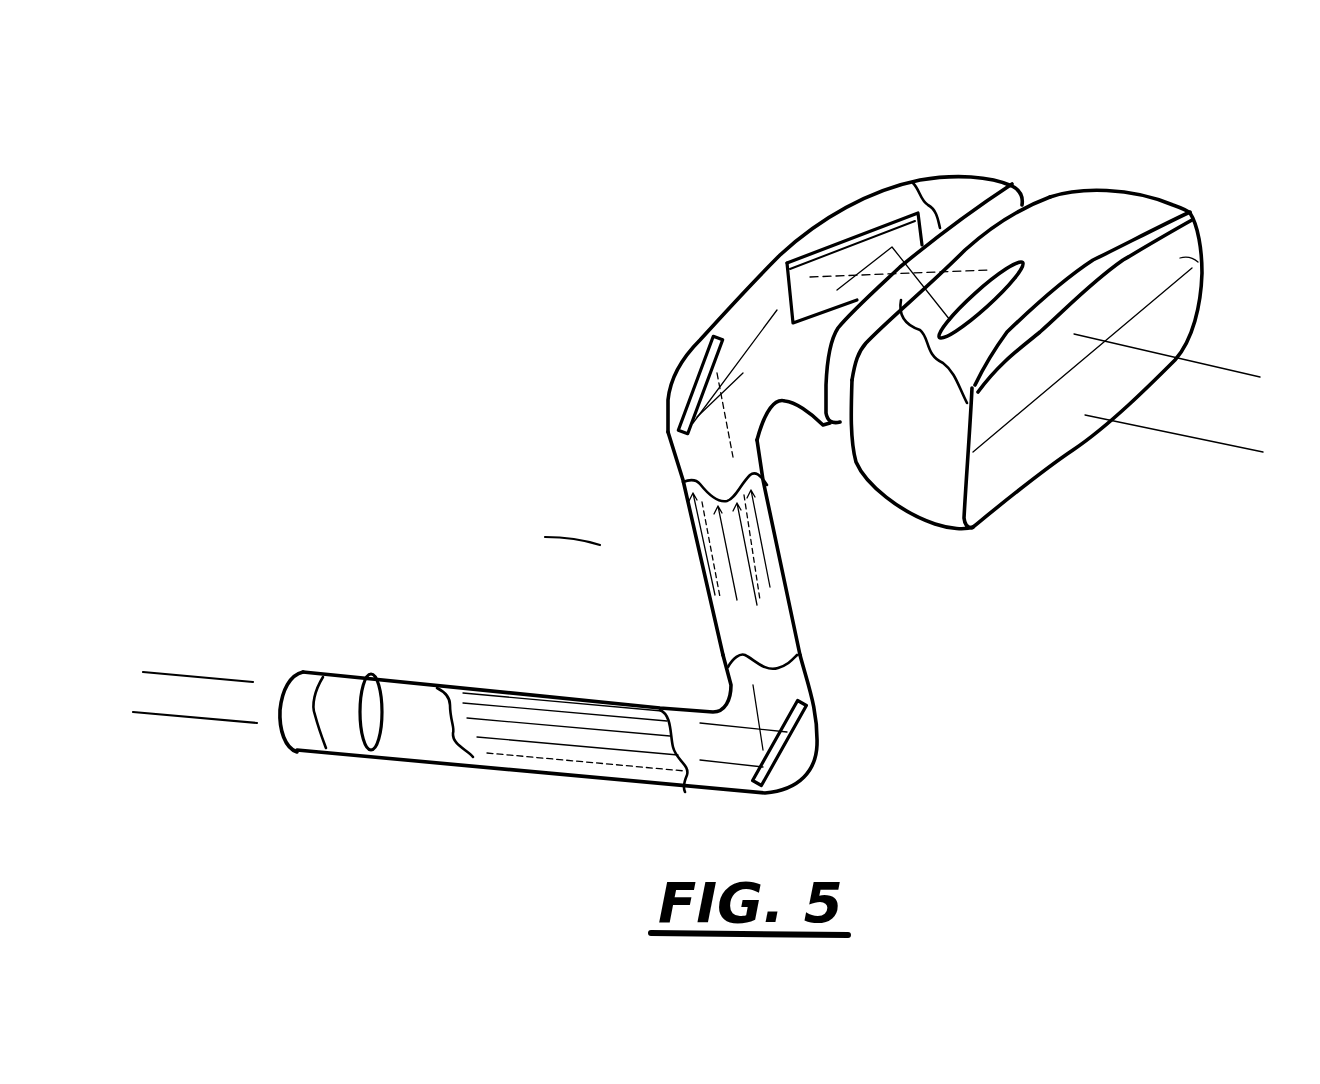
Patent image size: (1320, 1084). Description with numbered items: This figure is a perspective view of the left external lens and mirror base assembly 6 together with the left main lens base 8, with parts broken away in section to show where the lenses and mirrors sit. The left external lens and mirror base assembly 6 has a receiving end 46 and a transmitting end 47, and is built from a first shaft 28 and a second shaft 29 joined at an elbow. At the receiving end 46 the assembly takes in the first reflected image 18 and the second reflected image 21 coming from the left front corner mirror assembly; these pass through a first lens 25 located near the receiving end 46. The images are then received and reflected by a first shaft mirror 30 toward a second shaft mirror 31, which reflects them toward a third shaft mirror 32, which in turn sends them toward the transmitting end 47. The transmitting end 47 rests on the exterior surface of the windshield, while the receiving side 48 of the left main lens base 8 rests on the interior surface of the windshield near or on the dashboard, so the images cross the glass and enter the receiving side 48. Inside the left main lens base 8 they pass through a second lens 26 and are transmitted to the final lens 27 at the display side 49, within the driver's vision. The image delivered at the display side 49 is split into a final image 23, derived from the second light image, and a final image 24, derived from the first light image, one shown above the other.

The left external lens and mirror base assembly 6 is at (553, 538).
The left main lens base 8 is at (1057, 197).
The first reflected image 18 is at (192, 723).
The second reflected image 21 is at (203, 680).
The final image 23 is at (1210, 367).
The final image 24 is at (1173, 435).
The first lens 25 is at (377, 688).
The second lens 26 is at (990, 280).
The final lens 27 is at (1090, 273).
The first shaft 28 is at (535, 773).
The second shaft 29 is at (787, 580).
The first shaft mirror 30 is at (800, 737).
The second shaft mirror 31 is at (700, 365).
The third shaft mirror 32 is at (838, 230).
The receiving end 46 is at (273, 757).
The transmitting end 47 is at (955, 165).
The receiving side 48 is at (848, 448).
The display side 49 is at (1180, 258).